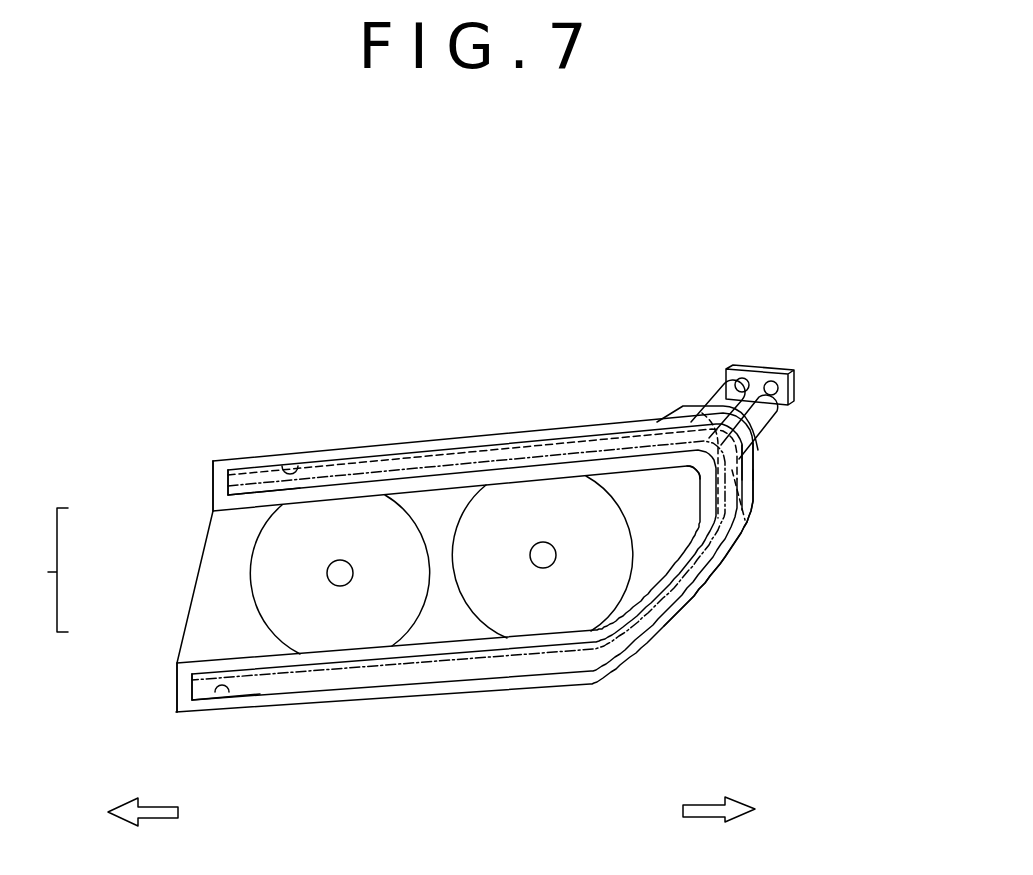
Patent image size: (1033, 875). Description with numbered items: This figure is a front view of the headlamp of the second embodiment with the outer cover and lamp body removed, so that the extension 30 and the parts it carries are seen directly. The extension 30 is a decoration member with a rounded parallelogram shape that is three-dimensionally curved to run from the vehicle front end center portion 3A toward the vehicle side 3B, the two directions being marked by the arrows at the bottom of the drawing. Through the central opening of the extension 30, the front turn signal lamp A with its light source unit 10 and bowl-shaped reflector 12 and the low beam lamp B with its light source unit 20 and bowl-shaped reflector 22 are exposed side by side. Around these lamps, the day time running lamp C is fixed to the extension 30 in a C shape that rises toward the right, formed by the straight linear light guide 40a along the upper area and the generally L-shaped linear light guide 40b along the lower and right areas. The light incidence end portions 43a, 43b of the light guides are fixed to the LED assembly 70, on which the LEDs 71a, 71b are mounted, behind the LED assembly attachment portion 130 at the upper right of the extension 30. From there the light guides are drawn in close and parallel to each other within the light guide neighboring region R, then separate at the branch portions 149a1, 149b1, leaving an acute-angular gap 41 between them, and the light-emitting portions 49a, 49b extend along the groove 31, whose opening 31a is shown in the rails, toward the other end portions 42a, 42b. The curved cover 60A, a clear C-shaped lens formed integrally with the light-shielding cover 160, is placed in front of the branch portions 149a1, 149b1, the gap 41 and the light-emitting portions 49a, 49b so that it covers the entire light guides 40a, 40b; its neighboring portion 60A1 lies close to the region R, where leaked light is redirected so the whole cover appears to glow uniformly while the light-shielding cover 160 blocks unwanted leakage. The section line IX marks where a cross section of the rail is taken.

The light source unit 10 is at (339, 642).
The reflector 12 is at (321, 632).
The light source unit 20 is at (534, 630).
The reflector 22 is at (510, 618).
The extension 30 is at (203, 585).
The groove 31 is at (239, 574).
The opening 31a is at (289, 458).
The linear light guide 40a is at (252, 486).
The linear light guide 40b is at (235, 679).
The gap 41 is at (740, 520).
The other end portion 42a is at (212, 480).
The other end portion 42b is at (176, 687).
The light incidence end portion 43a is at (737, 372).
The light incidence end portion 43b is at (779, 408).
The light-emitting portion 49a is at (396, 440).
The light-emitting portion 49b is at (704, 568).
The curved cover 60A is at (458, 447).
The neighboring portion 60A1 is at (692, 448).
The LED assembly 70 is at (800, 392).
The LED 71a is at (745, 376).
The LED 71b is at (774, 380).
The LED assembly attachment portion 130 is at (748, 462).
The branch portion 149a1 is at (702, 413).
The branch portion 149b1 is at (732, 480).
The light-shielding cover 160 is at (702, 412).
The front turn signal lamp A is at (421, 626).
The low beam lamp B is at (615, 612).
The day time running lamp C is at (46, 570).
The light guide neighboring region R is at (762, 455).
The section line IX is at (545, 436).
The vehicle front end center portion 3A is at (143, 826).
The vehicle side 3B is at (719, 824).